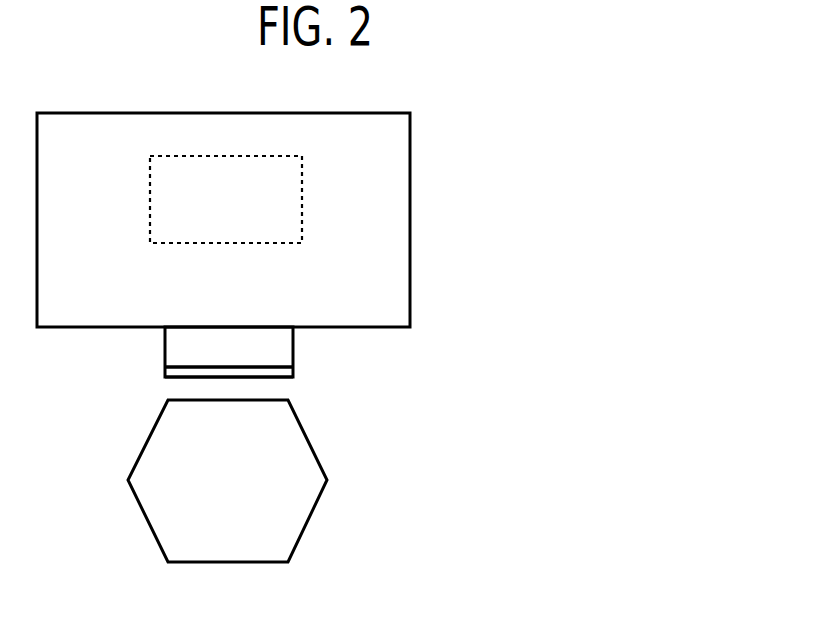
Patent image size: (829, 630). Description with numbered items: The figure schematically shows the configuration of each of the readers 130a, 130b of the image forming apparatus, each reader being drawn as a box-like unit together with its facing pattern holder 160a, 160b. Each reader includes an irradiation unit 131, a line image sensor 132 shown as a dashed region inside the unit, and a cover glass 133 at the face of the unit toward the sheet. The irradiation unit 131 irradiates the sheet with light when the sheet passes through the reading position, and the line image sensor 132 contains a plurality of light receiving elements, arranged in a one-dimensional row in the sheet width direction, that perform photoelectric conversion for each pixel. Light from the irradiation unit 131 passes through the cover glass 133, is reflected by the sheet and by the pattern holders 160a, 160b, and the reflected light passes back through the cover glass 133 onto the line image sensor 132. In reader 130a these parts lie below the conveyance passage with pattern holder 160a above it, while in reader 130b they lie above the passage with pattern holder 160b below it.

The reader 130a is at (312, 192).
The reader 130b is at (455, 127).
The irradiation unit 131 is at (293, 348).
The line image sensor 132 is at (267, 244).
The cover glass 133 is at (165, 372).
The pattern holder 160a is at (307, 486).
The pattern holder 160b is at (323, 517).